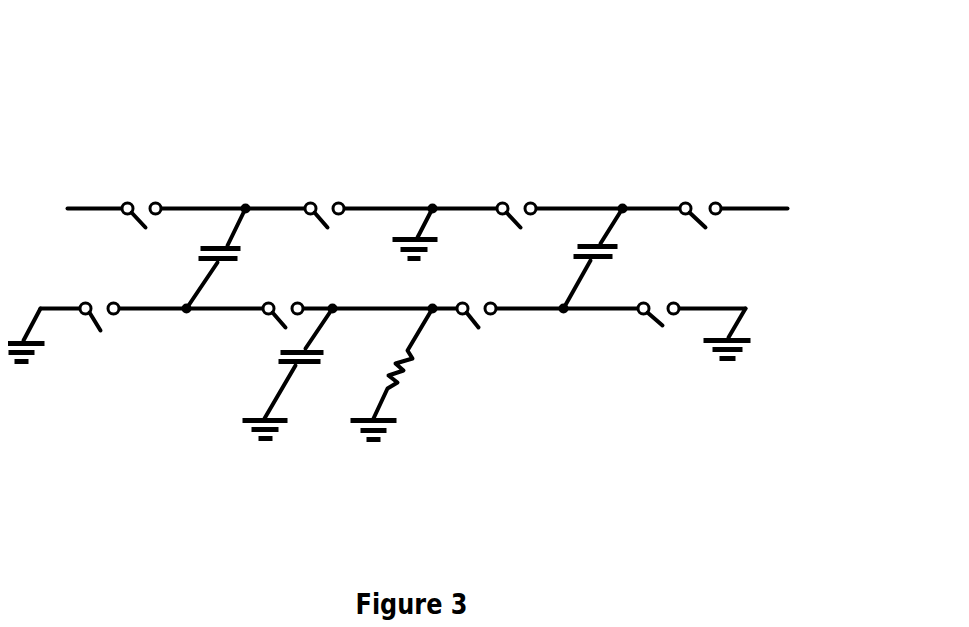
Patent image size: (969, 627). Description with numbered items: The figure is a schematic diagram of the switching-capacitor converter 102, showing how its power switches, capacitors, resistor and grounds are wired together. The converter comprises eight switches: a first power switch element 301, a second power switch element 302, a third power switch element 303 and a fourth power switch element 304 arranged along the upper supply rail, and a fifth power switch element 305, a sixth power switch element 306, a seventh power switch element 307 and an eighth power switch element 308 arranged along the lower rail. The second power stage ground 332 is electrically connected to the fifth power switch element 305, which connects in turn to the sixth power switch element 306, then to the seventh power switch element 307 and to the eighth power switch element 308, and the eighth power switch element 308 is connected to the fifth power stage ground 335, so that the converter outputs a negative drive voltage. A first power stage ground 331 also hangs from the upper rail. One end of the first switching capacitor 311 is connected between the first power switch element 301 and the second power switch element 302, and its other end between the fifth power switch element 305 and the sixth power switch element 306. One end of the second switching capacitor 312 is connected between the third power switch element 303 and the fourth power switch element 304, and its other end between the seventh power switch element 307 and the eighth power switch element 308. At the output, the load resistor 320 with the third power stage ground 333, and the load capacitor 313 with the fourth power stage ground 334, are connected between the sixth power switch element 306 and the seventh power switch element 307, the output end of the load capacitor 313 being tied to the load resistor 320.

The switching-capacitor converter 102 is at (110, 60).
The first power switch element 301 is at (697, 192).
The second power switch element 302 is at (513, 197).
The third power switch element 303 is at (317, 197).
The fourth power switch element 304 is at (129, 198).
The fifth power switch element 305 is at (657, 330).
The sixth power switch element 306 is at (488, 323).
The seventh power switch element 307 is at (270, 323).
The eighth power switch element 308 is at (97, 330).
The first switching capacitor 311 is at (613, 253).
The second switching capacitor 312 is at (242, 248).
The load capacitor 313 is at (317, 372).
The load resistor 320 is at (415, 369).
The first power stage ground 331 is at (437, 248).
The second power stage ground 332 is at (728, 365).
The third power stage ground 333 is at (377, 447).
The fourth power stage ground 334 is at (257, 442).
The fifth power stage ground 335 is at (19, 368).